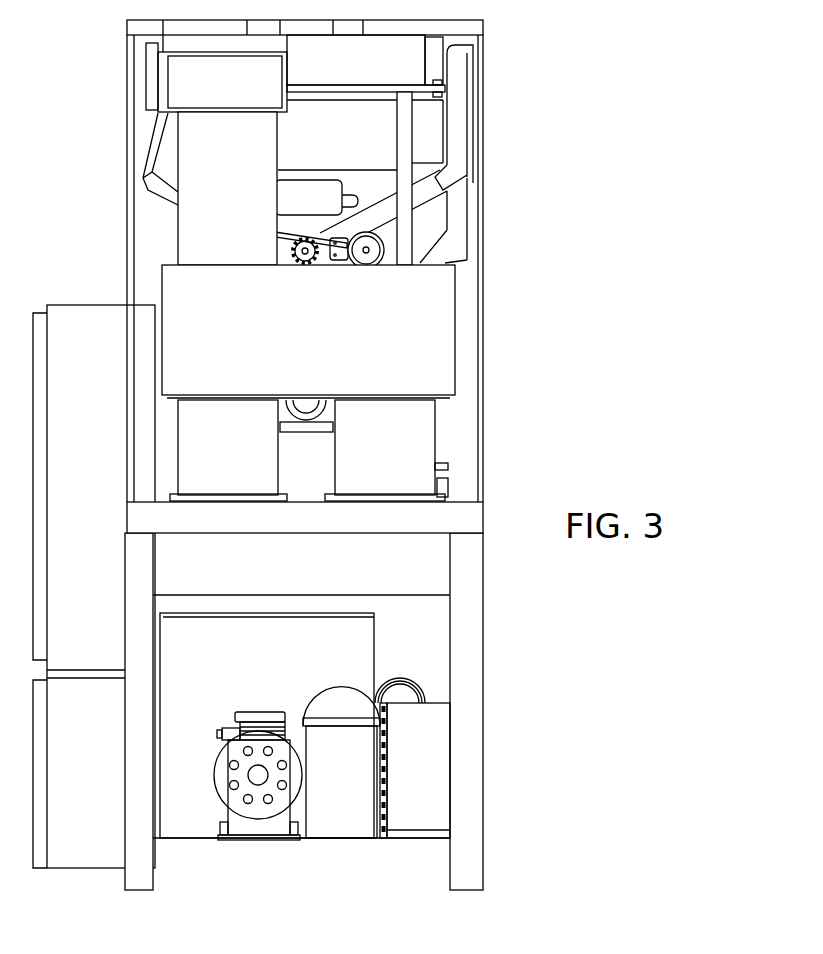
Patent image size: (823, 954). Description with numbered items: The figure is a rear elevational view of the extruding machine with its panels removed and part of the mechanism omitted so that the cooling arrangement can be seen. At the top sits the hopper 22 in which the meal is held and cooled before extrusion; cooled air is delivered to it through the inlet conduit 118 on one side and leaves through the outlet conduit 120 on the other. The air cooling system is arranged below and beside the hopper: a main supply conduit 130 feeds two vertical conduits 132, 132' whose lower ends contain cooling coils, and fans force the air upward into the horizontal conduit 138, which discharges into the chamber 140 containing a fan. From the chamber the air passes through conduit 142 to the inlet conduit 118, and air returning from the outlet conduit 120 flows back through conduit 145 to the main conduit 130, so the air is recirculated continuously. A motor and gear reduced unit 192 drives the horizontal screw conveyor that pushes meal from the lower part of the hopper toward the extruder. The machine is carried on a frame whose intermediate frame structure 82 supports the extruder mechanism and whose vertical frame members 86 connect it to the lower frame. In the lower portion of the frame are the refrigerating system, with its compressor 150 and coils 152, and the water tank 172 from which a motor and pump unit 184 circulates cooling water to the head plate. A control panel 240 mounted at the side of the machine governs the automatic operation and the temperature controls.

The hopper 22 is at (352, 138).
The intermediate frame structure 82 is at (352, 532).
The vertical frame members 86 is at (472, 661).
The inlet conduit 118 is at (150, 97).
The outlet conduit 120 is at (470, 153).
The main supply conduit 130 is at (324, 576).
The vertical conduit 132 is at (228, 450).
The vertical conduit 132' is at (386, 450).
The horizontal conduit 138 is at (331, 348).
The chamber 140 is at (244, 209).
The conduit 142 is at (242, 90).
The conduit 145 is at (460, 233).
The compressor 150 is at (250, 712).
The coils 152 is at (420, 825).
The water tank 172 is at (266, 652).
The motor and pump unit 184 is at (398, 680).
The motor and gear reduced unit 192 is at (360, 265).
The control panel 240 is at (105, 511).